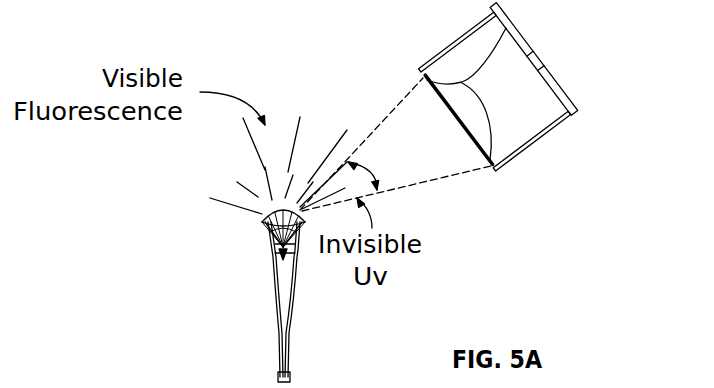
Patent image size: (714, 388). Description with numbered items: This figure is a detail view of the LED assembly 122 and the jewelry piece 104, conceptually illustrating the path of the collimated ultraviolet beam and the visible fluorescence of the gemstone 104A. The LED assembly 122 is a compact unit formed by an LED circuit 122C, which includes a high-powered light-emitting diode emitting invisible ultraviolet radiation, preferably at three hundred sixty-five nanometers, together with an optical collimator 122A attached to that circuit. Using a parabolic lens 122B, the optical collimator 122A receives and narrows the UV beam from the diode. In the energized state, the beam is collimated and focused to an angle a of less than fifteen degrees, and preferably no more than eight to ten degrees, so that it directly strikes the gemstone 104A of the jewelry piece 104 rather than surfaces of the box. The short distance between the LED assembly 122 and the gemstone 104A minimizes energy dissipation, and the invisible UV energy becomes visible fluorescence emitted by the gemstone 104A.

The jewelry piece 104 is at (262, 267).
The gemstone 104A is at (262, 218).
The LED assembly 122 is at (517, 107).
The optical collimator 122A is at (440, 53).
The parabolic lens 122B is at (513, 22).
The LED circuit 122C is at (552, 73).
The angle a is at (373, 172).